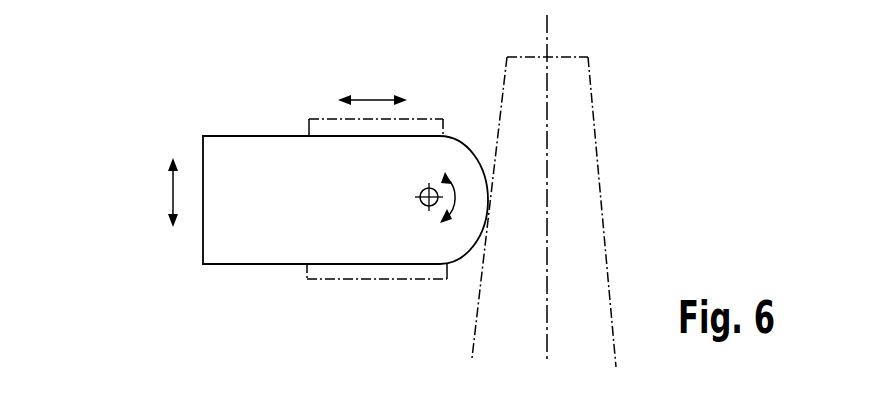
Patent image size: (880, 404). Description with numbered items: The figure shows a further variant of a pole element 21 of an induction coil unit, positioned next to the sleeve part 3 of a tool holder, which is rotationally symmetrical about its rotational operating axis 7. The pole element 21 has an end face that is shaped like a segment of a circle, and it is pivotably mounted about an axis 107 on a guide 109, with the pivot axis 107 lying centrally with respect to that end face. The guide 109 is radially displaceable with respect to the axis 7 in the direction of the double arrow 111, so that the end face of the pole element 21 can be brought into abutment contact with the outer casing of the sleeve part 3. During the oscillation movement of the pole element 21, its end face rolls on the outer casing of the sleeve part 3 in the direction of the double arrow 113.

The sleeve part 3 is at (477, 303).
The rotational operating axis 7 is at (548, 105).
The pole element 21 is at (260, 165).
The axis 107 is at (419, 197).
The guide 109 is at (312, 280).
The double arrow 111 is at (370, 98).
The double arrow 113 is at (172, 195).